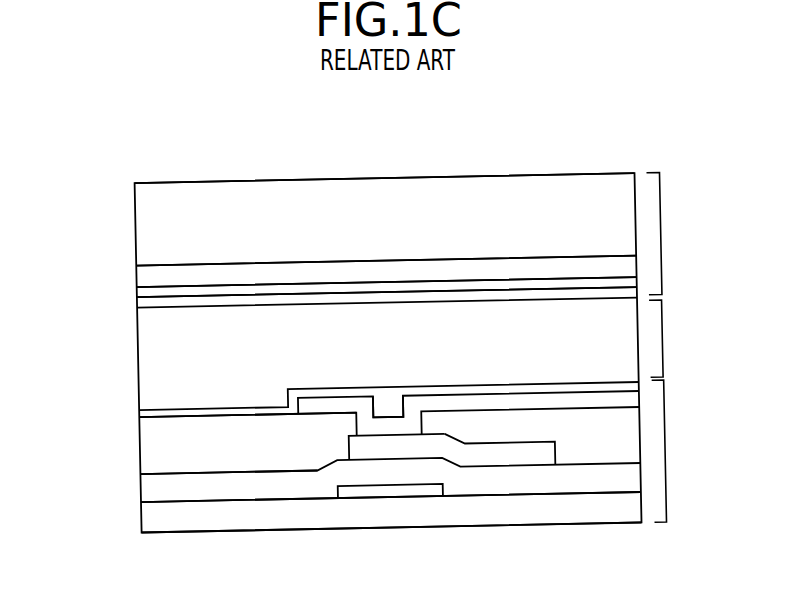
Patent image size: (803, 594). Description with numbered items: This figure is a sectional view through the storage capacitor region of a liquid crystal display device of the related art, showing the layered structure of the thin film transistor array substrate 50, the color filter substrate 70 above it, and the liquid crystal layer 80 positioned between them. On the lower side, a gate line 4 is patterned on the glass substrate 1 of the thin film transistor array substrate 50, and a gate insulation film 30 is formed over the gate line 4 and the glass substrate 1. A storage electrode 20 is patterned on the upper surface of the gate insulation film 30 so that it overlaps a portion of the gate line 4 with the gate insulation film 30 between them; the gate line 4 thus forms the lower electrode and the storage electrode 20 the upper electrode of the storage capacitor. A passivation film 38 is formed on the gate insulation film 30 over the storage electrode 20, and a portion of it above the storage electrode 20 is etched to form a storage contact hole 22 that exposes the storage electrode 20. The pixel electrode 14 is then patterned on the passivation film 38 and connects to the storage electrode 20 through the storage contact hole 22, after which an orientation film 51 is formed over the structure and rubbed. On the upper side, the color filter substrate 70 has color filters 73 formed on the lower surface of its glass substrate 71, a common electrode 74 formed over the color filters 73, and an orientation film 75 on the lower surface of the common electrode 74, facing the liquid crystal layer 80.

The glass substrate 1 is at (160, 517).
The gate line 4 is at (357, 492).
The pixel electrode 14 is at (550, 402).
The storage electrode 20 is at (400, 445).
The storage contact hole 22 is at (386, 393).
The gate insulation film 30 is at (160, 482).
The passivation film 38 is at (160, 445).
The thin film transistor array substrate 50 is at (676, 451).
The orientation film 51 is at (145, 413).
The color filter substrate 70 is at (671, 234).
The glass substrate 71 is at (158, 223).
The color filters 73 is at (150, 273).
The common electrode 74 is at (143, 290).
The orientation film 75 is at (142, 307).
The liquid crystal layer 80 is at (672, 338).